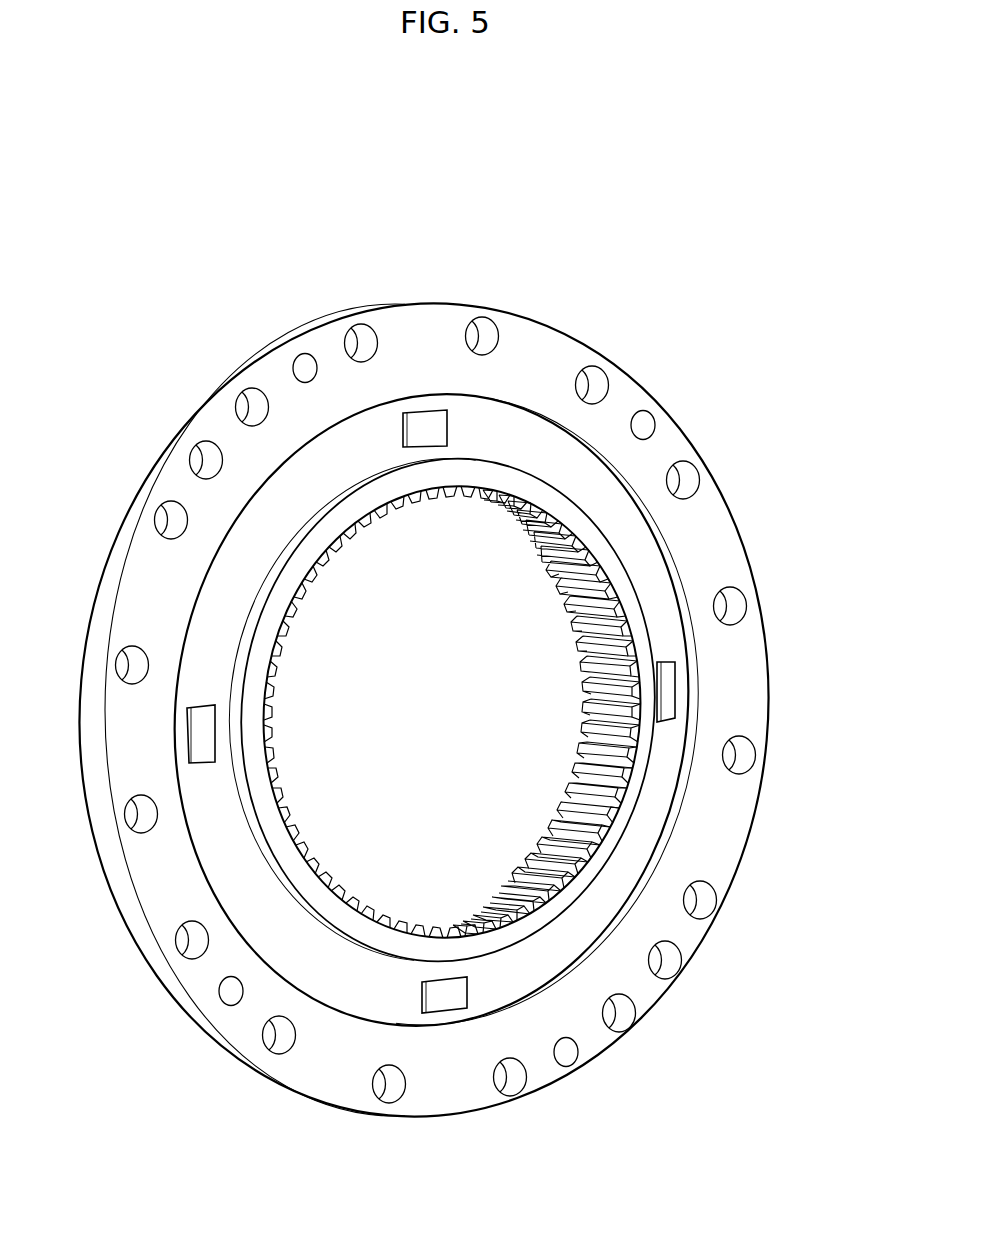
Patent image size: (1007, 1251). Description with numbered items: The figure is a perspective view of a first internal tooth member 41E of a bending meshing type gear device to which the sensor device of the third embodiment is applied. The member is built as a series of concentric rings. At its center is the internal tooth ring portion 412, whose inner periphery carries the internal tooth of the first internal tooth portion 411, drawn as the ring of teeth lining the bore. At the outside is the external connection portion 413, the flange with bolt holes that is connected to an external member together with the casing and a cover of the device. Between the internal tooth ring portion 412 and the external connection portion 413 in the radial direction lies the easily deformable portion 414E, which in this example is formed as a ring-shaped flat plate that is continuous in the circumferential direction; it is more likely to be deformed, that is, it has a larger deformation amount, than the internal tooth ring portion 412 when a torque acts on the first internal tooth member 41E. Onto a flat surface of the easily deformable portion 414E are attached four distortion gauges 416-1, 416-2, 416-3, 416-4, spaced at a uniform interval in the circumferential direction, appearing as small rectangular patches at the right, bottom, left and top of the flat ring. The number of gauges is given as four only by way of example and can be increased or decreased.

The first internal tooth member 41E is at (738, 268).
The first internal tooth portion 411 is at (530, 853).
The internal tooth ring portion 412 is at (445, 467).
The external connection portion 413 is at (280, 383).
The easily deformable portion 414E is at (255, 552).
The distortion gauge 416-1 is at (668, 680).
The distortion gauge 416-2 is at (440, 1000).
The distortion gauge 416-3 is at (195, 747).
The distortion gauge 416-4 is at (428, 423).